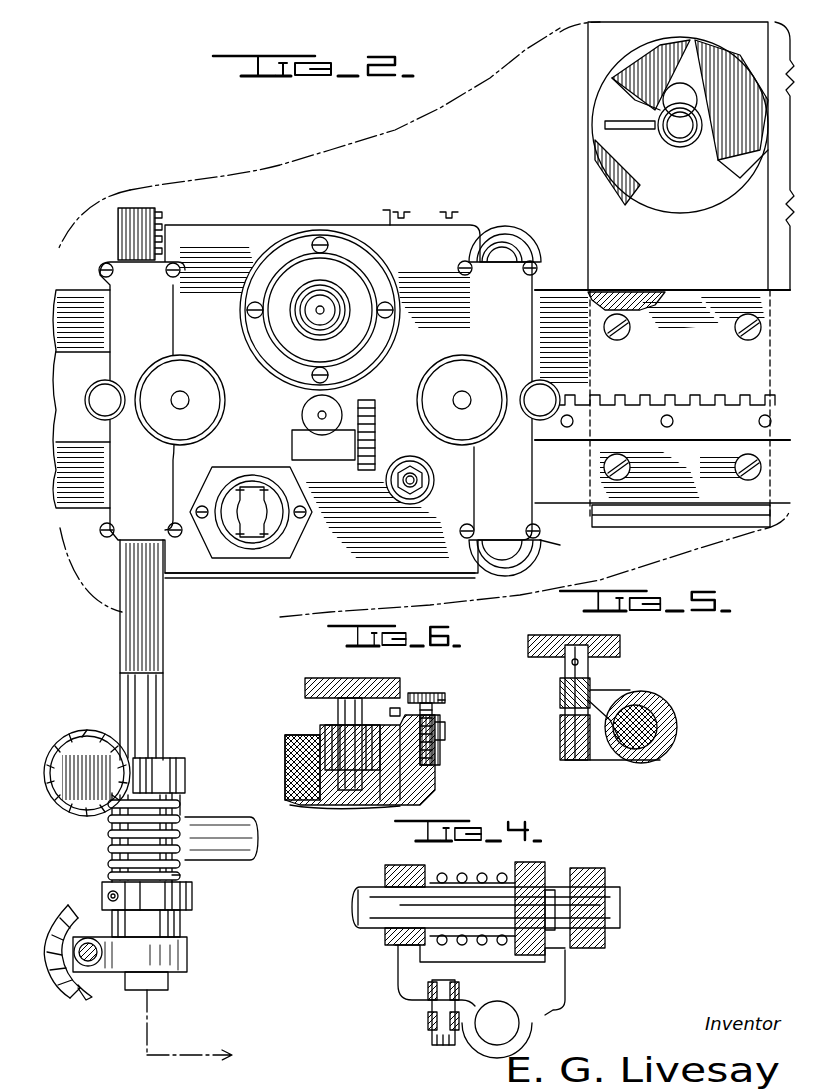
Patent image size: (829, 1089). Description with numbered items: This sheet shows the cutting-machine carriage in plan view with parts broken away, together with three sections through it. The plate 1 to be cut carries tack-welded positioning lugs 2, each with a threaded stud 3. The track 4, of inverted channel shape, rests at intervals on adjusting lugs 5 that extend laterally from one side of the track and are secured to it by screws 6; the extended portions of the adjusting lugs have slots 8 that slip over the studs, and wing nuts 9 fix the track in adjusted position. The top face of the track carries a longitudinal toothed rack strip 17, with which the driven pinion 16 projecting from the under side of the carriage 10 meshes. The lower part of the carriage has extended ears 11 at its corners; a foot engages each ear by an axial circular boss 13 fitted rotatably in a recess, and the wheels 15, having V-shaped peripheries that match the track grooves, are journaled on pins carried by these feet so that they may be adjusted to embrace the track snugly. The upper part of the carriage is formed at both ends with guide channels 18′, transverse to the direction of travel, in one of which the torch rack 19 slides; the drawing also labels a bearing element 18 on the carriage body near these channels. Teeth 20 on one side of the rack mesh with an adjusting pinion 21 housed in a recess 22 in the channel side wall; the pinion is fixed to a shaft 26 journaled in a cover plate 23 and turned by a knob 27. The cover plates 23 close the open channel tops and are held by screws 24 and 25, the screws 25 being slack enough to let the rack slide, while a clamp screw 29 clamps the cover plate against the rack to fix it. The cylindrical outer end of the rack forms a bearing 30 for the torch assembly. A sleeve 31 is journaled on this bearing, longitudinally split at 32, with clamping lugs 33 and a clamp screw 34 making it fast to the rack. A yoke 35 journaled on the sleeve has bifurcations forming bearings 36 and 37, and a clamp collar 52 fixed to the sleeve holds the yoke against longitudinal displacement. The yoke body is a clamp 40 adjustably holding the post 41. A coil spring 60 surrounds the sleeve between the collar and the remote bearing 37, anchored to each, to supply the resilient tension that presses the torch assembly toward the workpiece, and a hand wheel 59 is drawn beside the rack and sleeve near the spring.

In FIG. 2, the plate 1 is at (510, 60).
In FIG. 2, the positioning lug 2 is at (595, 55).
In FIG. 2, the threaded stud 3 is at (674, 137).
In FIG. 2, the track 4 is at (712, 298).
In FIG. 2, the adjusting lug 5 is at (598, 265).
In FIG. 2, the screw 6 is at (630, 338).
In FIG. 2, the slot 8 is at (697, 100).
In FIG. 2, the wing nut 9 is at (685, 140).
In FIG. 2, the carriage 10 is at (396, 214).
In FIG. 2, the extended ear 11 is at (118, 245).
In FIG. 2, the axial circular boss 13 is at (555, 542).
In FIG. 2, the wheel 15 is at (105, 240).
In FIG. 2, the driven pinion 16 is at (620, 300).
In FIG. 2, the toothed rack strip 17 is at (572, 432).
In FIG. 2, the bearing 18 is at (474, 497).
In FIG. 2, the guide channel 18′ is at (165, 485).
In FIG. 6, the guide channel 18′ is at (435, 775).
In FIG. 2, the torch rack 19 is at (158, 657).
In FIG. 6, the torch rack 19 is at (440, 728).
In FIG. 2, the teeth 20 is at (150, 275).
In FIG. 6, the teeth 20 is at (440, 740).
In FIG. 6, the adjusting pinion 21 is at (332, 745).
In FIG. 6, the recess 22 is at (335, 780).
In FIG. 2, the cover plate 23 is at (155, 280).
In FIG. 6, the cover plate 23 is at (430, 700).
In FIG. 2, the screw 24 is at (176, 280).
In FIG. 2, the screw 25 is at (98, 278).
In FIG. 6, the screw 25 is at (410, 700).
In FIG. 2, the shaft 26 is at (183, 398).
In FIG. 6, the shaft 26 is at (358, 700).
In FIG. 2, the knob 27 is at (215, 415).
In FIG. 6, the knob 27 is at (330, 690).
In FIG. 2, the clamp screw 29 is at (108, 398).
In FIG. 6, the clamp screw 29 is at (440, 697).
In FIG. 2, the bearing 30 is at (165, 692).
In FIG. 5, the bearing 30 is at (672, 742).
In FIG. 4, the bearing 30 is at (620, 898).
In FIG. 2, the sleeve 31 is at (185, 818).
In FIG. 5, the sleeve 31 is at (655, 688).
In FIG. 4, the sleeve 31 is at (398, 950).
In FIG. 5, the split 32 is at (605, 710).
In FIG. 4, the split 32 is at (553, 895).
In FIG. 2, the clamping lug 33 is at (100, 975).
In FIG. 5, the clamping lug 33 is at (560, 740).
In FIG. 4, the clamping lug 33 is at (443, 1012).
In FIG. 2, the clamp screw 34 is at (66, 992).
In FIG. 5, the clamp screw 34 is at (566, 678).
In FIG. 2, the yoke 35 is at (198, 870).
In FIG. 4, the yoke 35 is at (588, 982).
In FIG. 2, the bearing 36 is at (182, 927).
In FIG. 4, the bearing 36 is at (580, 880).
In FIG. 2, the bearing 37 is at (186, 782).
In FIG. 4, the bearing 37 is at (405, 868).
In FIG. 4, the clamp 40 is at (530, 1040).
In FIG. 2, the post 41 is at (240, 825).
In FIG. 4, the post 41 is at (519, 1020).
In FIG. 2, the clamp collar 52 is at (193, 892).
In FIG. 4, the clamp collar 52 is at (530, 868).
In FIG. 2, the hand wheel 59 is at (75, 810).
In FIG. 2, the coil spring 60 is at (106, 850).
In FIG. 4, the coil spring 60 is at (465, 873).